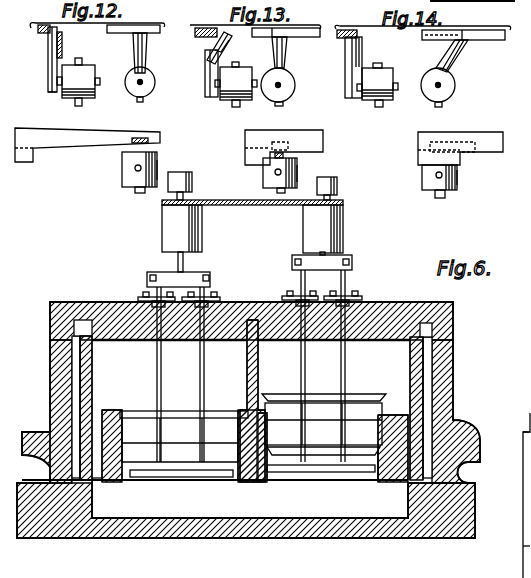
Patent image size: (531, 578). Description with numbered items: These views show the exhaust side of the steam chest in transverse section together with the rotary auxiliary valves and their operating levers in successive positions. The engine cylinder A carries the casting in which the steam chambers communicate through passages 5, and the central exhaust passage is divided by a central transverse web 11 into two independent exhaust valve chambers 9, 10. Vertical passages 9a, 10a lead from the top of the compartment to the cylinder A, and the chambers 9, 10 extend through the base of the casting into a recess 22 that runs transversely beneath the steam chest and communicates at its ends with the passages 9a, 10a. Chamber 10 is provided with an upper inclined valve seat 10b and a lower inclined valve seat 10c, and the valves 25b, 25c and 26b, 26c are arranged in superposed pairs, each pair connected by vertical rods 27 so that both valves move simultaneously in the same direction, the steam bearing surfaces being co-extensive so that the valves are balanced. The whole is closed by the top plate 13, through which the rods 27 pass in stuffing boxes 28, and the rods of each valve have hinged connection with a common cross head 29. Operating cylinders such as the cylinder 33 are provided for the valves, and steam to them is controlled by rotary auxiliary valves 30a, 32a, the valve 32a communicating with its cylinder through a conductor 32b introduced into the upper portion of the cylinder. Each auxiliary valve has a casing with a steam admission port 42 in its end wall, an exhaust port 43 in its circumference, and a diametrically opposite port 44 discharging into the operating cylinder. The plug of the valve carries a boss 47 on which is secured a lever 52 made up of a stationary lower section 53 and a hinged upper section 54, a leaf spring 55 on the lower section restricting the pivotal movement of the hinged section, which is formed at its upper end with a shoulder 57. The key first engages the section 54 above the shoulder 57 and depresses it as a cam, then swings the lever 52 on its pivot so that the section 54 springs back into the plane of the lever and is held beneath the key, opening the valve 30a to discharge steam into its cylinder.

In FIG. 6, the passages 5 is at (78, 369).
In FIG. 6, the exhaust valve chamber 9 is at (163, 408).
In FIG. 6, the vertical passage 9a is at (100, 478).
In FIG. 6, the exhaust valve chamber 10 is at (340, 408).
In FIG. 6, the vertical passage 10a is at (405, 480).
In FIG. 6, the upper inclined valve seat 10b is at (379, 415).
In FIG. 6, the lower inclined valve seat 10c is at (372, 468).
In FIG. 6, the central transverse web 11 is at (240, 473).
In FIG. 6, the top plate 13 is at (418, 311).
In FIG. 6, the recess 22 is at (248, 499).
In FIG. 6, the upper exhaust valve 25b is at (140, 408).
In FIG. 6, the lower exhaust valve 25c is at (163, 468).
In FIG. 6, the upper exhaust valve 26b is at (383, 387).
In FIG. 6, the lower exhaust valve 26c is at (312, 452).
In FIG. 6, the vertical rods 27 is at (251, 366).
In FIG. 6, the stuffing boxes 28 is at (140, 295).
In FIG. 6, the cross head 29 is at (160, 272).
In FIG. 12, the rotary auxiliary valve 30a is at (128, 91).
In FIG. 13, the rotary auxiliary valve 30a is at (278, 102).
In FIG. 14, the rotary auxiliary valve 30a is at (433, 98).
In FIG. 6, the rotary auxiliary valve 30a is at (162, 166).
In FIG. 6, the rotary auxiliary valve 32a is at (192, 181).
In FIG. 6, the conductor 32b is at (163, 204).
In FIG. 6, the valve operating cylinder 33 is at (252, 229).
In FIG. 12, the steam admission port 42 is at (97, 80).
In FIG. 12, the exhaust port 43 is at (93, 58).
In FIG. 6, the exhaust port 43 is at (135, 169).
In FIG. 12, the discharge port 44 is at (75, 109).
In FIG. 12, the boss 47 is at (57, 93).
In FIG. 6, the boss 47 is at (87, 145).
In FIG. 12, the lever 52 is at (48, 70).
In FIG. 13, the lever 52 is at (299, 65).
In FIG. 14, the lever 52 is at (362, 53).
In FIG. 6, the lever 52 is at (150, 142).
In FIG. 13, the lower section 53 is at (226, 57).
In FIG. 6, the lower section 53 is at (530, 546).
In FIG. 13, the hinged upper section 54 is at (224, 46).
In FIG. 6, the hinged upper section 54 is at (292, 160).
In FIG. 12, the leaf spring 55 is at (63, 38).
In FIG. 12, the shoulder 57 is at (44, 36).
In FIG. 14, the shoulder 57 is at (348, 40).
In FIG. 6, the shoulder 57 is at (523, 426).
In FIG. 6, the cylinder A is at (467, 540).